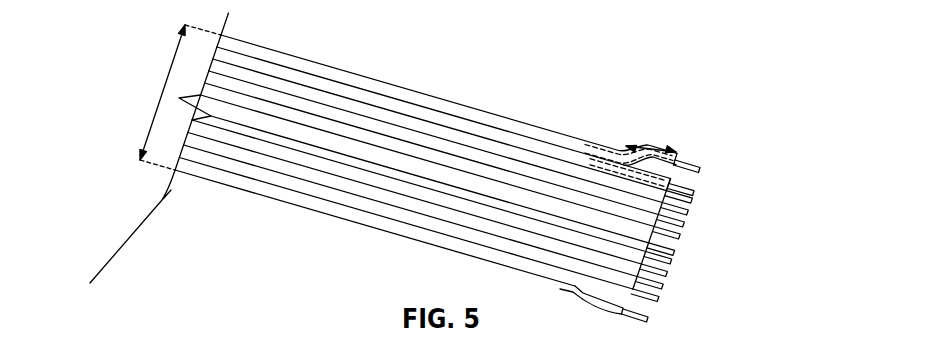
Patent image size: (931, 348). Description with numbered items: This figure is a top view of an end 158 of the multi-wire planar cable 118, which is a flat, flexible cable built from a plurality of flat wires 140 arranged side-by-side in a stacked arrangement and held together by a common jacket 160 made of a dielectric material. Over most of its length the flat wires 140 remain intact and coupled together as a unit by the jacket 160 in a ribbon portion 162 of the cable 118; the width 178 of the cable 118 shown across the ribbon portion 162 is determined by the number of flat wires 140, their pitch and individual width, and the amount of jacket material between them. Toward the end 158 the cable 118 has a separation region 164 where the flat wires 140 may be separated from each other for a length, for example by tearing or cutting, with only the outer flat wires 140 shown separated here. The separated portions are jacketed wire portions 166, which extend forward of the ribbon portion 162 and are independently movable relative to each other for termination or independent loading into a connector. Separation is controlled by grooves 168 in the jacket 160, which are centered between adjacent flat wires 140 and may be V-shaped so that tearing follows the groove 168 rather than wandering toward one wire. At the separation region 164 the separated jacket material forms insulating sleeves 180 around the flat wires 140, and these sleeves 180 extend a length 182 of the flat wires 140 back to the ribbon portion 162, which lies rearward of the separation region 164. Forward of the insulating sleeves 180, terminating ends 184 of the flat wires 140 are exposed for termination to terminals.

The multi-wire planar cable 118 is at (540, 86).
The flat wire 140 is at (608, 152).
The end 158 is at (756, 156).
The common jacket 160 is at (458, 110).
The ribbon portion 162 is at (385, 252).
The separation region 164 is at (679, 147).
The jacketed wire portion 166 is at (648, 146).
The groove 168 is at (552, 142).
The width 178 is at (165, 85).
The insulating sleeve 180 is at (686, 152).
The length 182 is at (676, 136).
The terminating end 184 is at (712, 176).